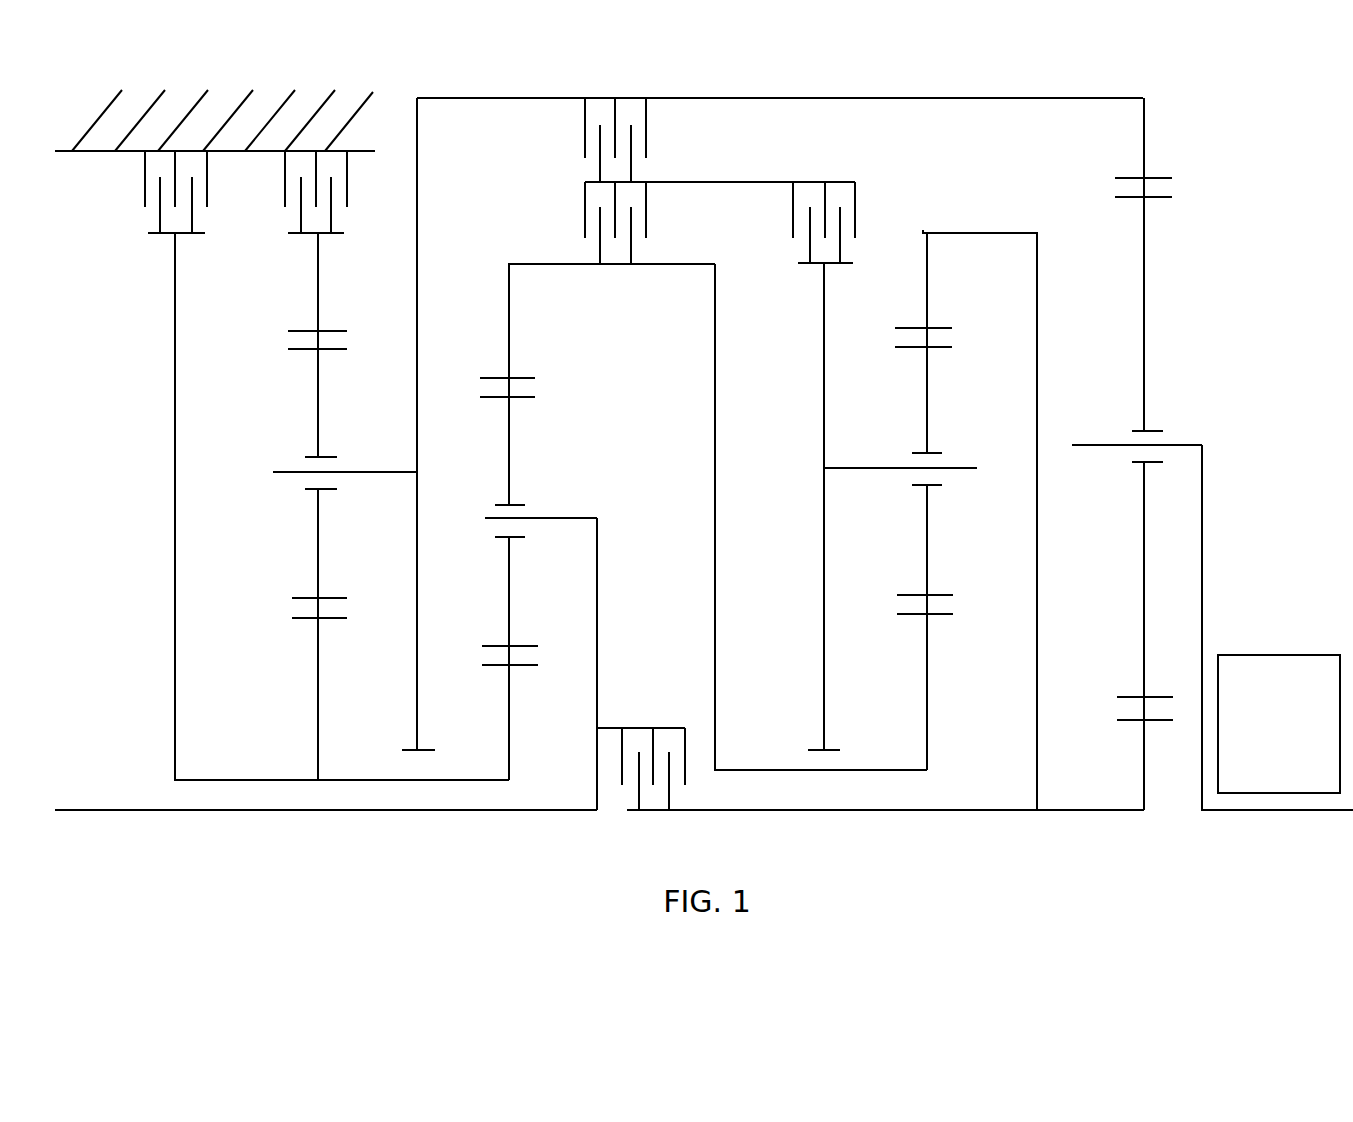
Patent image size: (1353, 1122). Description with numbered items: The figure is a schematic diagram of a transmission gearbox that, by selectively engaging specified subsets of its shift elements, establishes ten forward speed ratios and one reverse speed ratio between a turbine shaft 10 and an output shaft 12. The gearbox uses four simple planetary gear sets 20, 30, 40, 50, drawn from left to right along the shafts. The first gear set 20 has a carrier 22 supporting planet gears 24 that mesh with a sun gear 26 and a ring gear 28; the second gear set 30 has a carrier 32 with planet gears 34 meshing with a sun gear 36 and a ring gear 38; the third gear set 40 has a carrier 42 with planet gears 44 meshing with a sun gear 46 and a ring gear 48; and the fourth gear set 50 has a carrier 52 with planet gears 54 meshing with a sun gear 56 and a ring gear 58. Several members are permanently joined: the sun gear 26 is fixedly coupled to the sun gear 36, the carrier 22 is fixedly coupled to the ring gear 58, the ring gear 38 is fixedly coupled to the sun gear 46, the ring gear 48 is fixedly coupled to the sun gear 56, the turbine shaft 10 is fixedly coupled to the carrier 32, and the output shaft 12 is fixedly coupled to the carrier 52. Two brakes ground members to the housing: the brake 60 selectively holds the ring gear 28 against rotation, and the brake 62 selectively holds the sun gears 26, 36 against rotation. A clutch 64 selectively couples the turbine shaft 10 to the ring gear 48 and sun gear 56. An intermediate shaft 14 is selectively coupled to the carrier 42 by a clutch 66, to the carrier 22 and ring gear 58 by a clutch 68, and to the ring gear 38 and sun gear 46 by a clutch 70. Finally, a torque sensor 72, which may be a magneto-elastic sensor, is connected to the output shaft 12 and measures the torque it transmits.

The turbine shaft 10 is at (168, 811).
The output shaft 12 is at (1297, 810).
The intermediate shaft 14 is at (753, 182).
The planetary gear set 20 is at (321, 553).
The carrier 22 is at (417, 280).
The planet gears 24 is at (320, 408).
The sun gear 26 is at (320, 660).
The ring gear 28 is at (318, 292).
The planetary gear set 30 is at (504, 570).
The carrier 32 is at (598, 615).
The planet gears 34 is at (512, 458).
The sun gear 36 is at (510, 708).
The ring gear 38 is at (509, 340).
The planetary gear set 40 is at (876, 551).
The carrier 42 is at (824, 427).
The planet gears 44 is at (927, 413).
The sun gear 46 is at (927, 657).
The ring gear 48 is at (923, 288).
The planetary gear set 50 is at (1148, 486).
The carrier 52 is at (1201, 467).
The planet gears 54 is at (1144, 377).
The sun gear 56 is at (1144, 788).
The ring gear 58 is at (1143, 150).
The brake 60 is at (285, 177).
The brake 62 is at (145, 177).
The clutch 64 is at (662, 728).
The clutch 66 is at (805, 182).
The clutch 68 is at (585, 150).
The clutch 70 is at (585, 208).
The torque sensor 72 is at (1288, 655).